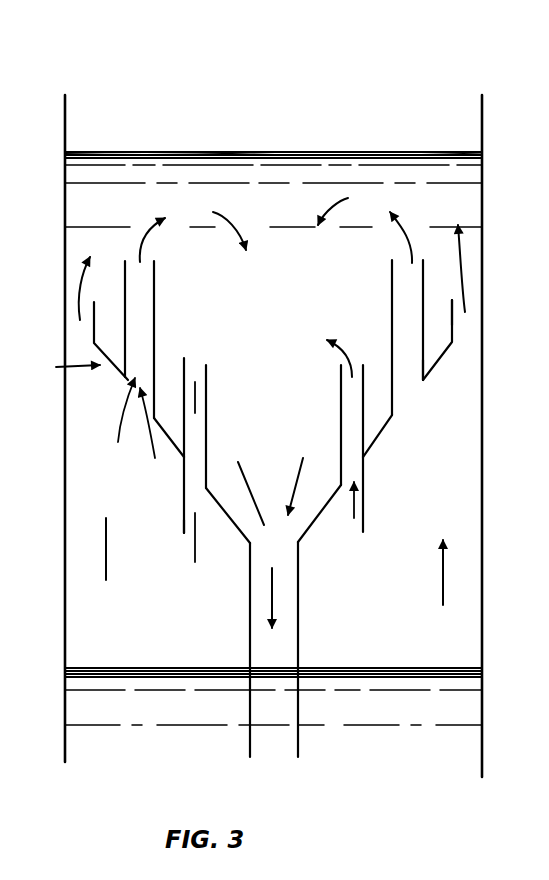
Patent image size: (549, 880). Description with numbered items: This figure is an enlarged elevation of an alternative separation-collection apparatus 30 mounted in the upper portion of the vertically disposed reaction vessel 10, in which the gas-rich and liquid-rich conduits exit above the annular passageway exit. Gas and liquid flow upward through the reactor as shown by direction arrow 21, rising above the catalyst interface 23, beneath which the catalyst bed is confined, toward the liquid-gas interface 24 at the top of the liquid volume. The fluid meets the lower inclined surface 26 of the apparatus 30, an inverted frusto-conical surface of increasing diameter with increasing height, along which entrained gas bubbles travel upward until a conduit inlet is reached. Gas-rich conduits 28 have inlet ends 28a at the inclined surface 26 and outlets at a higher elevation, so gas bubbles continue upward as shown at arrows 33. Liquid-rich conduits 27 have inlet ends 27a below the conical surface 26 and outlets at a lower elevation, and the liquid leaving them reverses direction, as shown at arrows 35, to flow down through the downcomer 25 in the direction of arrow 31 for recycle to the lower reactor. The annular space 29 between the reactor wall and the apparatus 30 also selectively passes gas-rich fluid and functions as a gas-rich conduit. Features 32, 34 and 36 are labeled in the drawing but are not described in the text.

The reaction vessel 10 is at (61, 224).
The direction arrow 21 is at (443, 575).
The catalyst interface 23 is at (98, 676).
The liquid-gas interface 24 is at (230, 152).
The downcomer 25 is at (300, 628).
The inclined surface 26 is at (377, 440).
The liquid-rich conduits 27 is at (341, 393).
The inlet ends of liquid-rich conduits 27a is at (184, 533).
The gas-rich conduits 28 is at (392, 327).
The inlet ends of gas-rich conduits 28a is at (408, 388).
The annular space 29 is at (80, 330).
The separation-collection apparatus 30 is at (62, 369).
The arrow 31 is at (272, 600).
The upper end of deflector plate 32 is at (452, 325).
The arrows 33 is at (412, 228).
The deflector plate 34 is at (452, 343).
The arrows 35 is at (318, 225).
The junction of riser tubes 36 is at (298, 543).